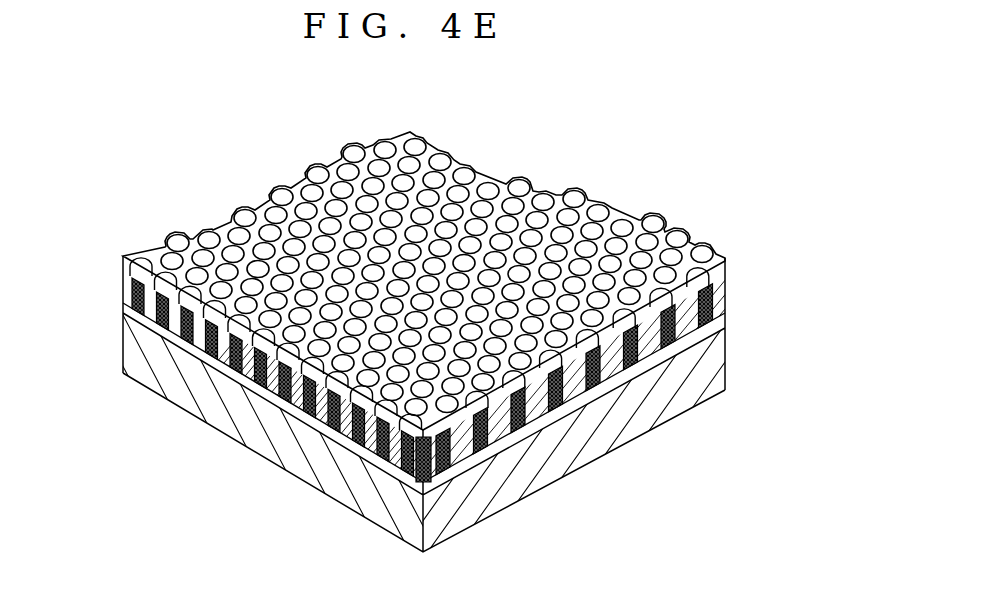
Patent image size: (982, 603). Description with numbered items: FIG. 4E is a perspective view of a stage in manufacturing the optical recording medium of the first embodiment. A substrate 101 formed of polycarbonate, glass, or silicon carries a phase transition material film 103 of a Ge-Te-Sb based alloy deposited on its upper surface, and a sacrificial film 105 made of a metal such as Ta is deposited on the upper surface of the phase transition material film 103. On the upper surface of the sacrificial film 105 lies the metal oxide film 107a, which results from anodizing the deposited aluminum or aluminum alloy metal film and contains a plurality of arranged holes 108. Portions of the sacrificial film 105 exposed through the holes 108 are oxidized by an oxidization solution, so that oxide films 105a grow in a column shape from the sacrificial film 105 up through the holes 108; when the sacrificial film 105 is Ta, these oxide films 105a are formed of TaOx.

The substrate 101 is at (698, 369).
The phase transition material film 103 is at (720, 319).
The sacrificial film 105 is at (722, 300).
The oxide film 105a is at (124, 298).
The metal oxide film 107a is at (728, 282).
The hole 108 is at (606, 198).